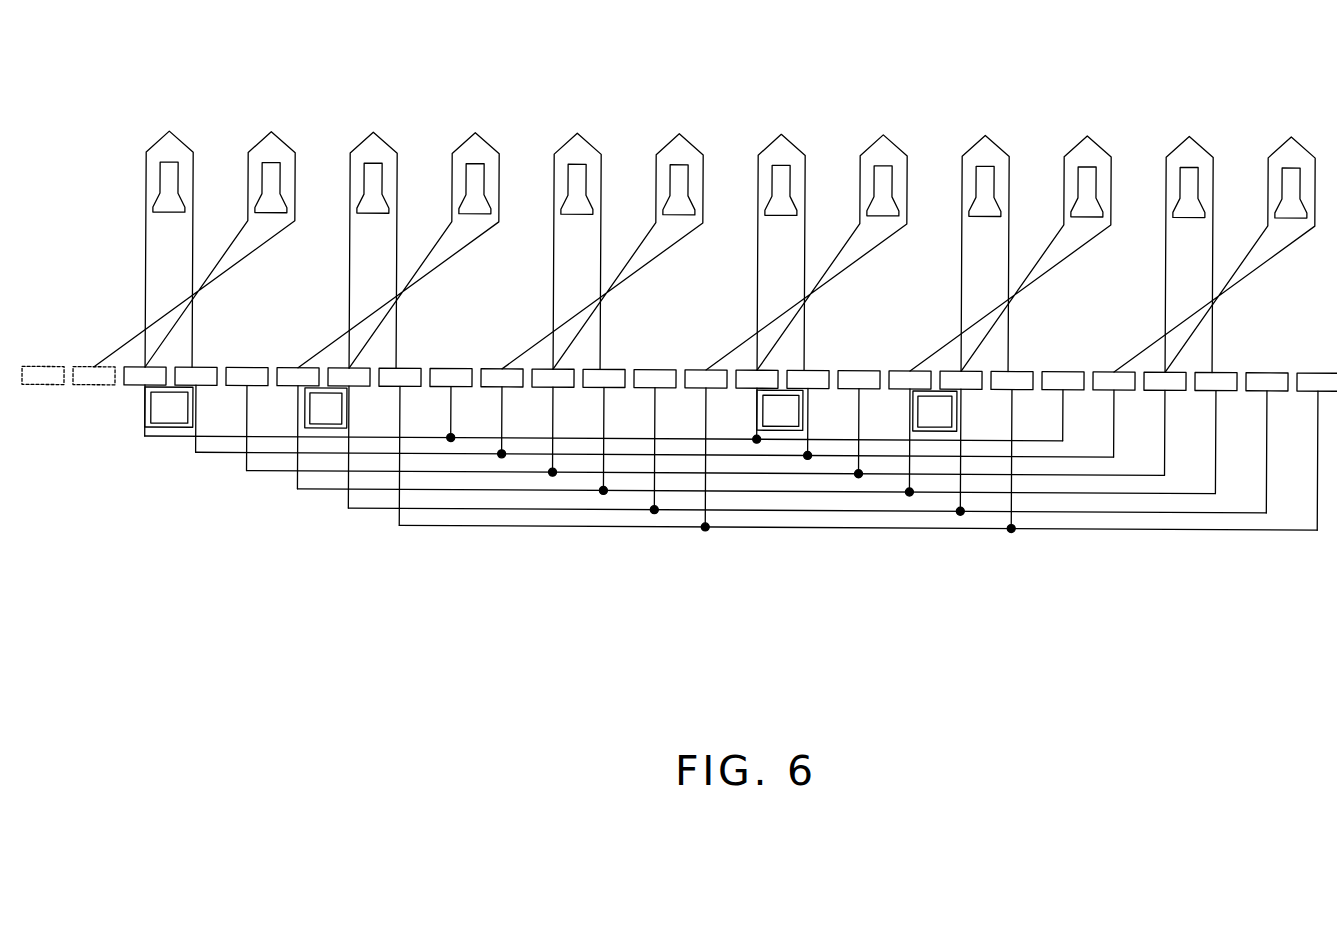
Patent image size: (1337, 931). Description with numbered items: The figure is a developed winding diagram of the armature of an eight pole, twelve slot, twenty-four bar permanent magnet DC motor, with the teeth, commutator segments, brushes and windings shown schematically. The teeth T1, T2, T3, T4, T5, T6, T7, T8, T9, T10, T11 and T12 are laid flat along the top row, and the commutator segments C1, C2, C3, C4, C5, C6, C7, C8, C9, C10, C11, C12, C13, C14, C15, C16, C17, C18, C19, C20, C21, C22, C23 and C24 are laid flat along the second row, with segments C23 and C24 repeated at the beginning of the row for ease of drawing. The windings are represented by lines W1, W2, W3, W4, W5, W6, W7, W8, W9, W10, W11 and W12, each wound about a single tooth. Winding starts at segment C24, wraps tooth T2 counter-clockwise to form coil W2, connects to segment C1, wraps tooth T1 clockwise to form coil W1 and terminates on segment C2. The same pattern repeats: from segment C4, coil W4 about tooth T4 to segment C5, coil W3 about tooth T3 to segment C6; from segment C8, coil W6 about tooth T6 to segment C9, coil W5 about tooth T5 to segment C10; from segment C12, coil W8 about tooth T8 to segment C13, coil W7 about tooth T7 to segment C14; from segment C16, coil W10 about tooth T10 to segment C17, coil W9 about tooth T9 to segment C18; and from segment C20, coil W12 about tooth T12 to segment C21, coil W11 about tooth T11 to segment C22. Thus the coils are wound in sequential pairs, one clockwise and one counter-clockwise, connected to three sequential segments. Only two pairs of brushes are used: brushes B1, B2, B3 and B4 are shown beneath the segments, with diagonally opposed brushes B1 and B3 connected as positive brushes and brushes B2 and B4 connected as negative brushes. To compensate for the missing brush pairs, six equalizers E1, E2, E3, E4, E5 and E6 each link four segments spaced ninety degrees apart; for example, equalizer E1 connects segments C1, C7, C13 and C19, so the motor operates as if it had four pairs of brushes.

The coil W1 is at (154, 139).
The coil W2 is at (256, 139).
The coil W3 is at (358, 139).
The coil W4 is at (460, 139).
The coil W5 is at (562, 139).
The coil W6 is at (664, 139).
The coil W7 is at (766, 139).
The coil W8 is at (868, 139).
The coil W9 is at (970, 139).
The coil W10 is at (1072, 139).
The coil W11 is at (1174, 139).
The coil W12 is at (1276, 139).
The tooth T1 is at (169, 187).
The tooth T2 is at (271, 188).
The tooth T3 is at (373, 188).
The tooth T4 is at (475, 189).
The tooth T5 is at (577, 189).
The tooth T6 is at (679, 190).
The tooth T7 is at (781, 190).
The tooth T8 is at (883, 191).
The tooth T9 is at (985, 191).
The tooth T10 is at (1087, 192).
The tooth T11 is at (1189, 192).
The tooth T12 is at (1291, 193).
The commutator segment C1 is at (145, 401).
The commutator segment C2 is at (196, 409).
The commutator segment C3 is at (247, 418).
The commutator segment C4 is at (297, 428).
The commutator segment C5 is at (348, 438).
The commutator segment C6 is at (399, 446).
The commutator segment C7 is at (451, 404).
The commutator segment C8 is at (502, 413).
The commutator segment C9 is at (553, 422).
The commutator segment C10 is at (603, 431).
The commutator segment C11 is at (654, 442).
The commutator segment C12 is at (705, 450).
The commutator segment C13 is at (757, 406).
The commutator segment C14 is at (808, 414).
The commutator segment C15 is at (858, 424).
The commutator segment C16 is at (909, 433).
The commutator segment C17 is at (960, 443).
The commutator segment C18 is at (1011, 451).
The commutator segment C19 is at (1063, 406).
The commutator segment C20 is at (1114, 414).
The commutator segment C21 is at (1165, 423).
The commutator segment C22 is at (1215, 432).
The commutator segment C23 is at (654, 439).
The commutator segment C24 is at (704, 449).
The brush B1 is at (169, 407).
The brush B2 is at (326, 408).
The brush B3 is at (780, 410).
The brush B4 is at (935, 411).
The equalizer E1 is at (155, 438).
The equalizer E2 is at (210, 453).
The equalizer E3 is at (265, 471).
The equalizer E4 is at (317, 489).
The equalizer E5 is at (367, 508).
The equalizer E6 is at (425, 525).